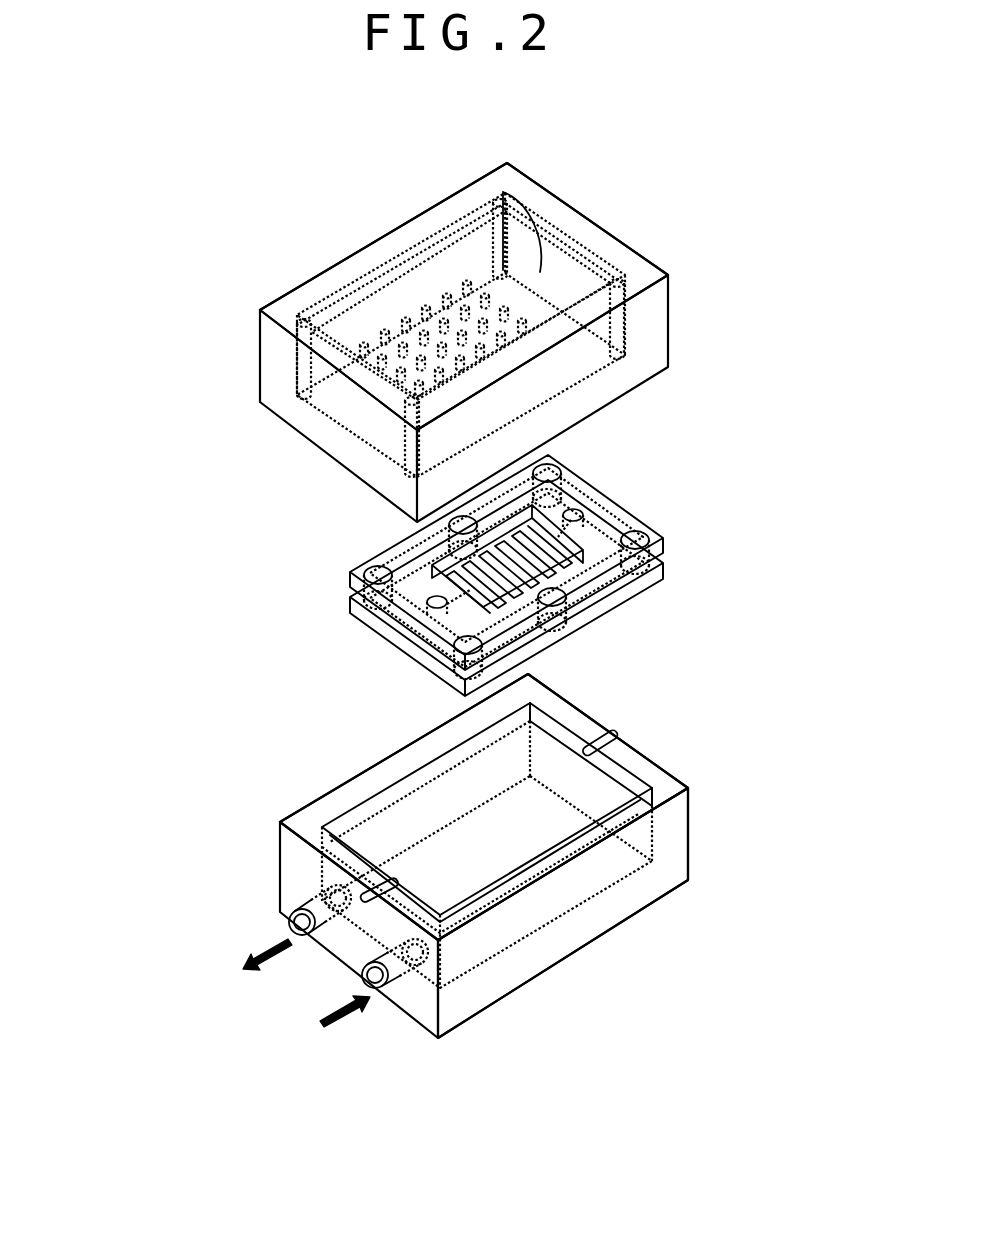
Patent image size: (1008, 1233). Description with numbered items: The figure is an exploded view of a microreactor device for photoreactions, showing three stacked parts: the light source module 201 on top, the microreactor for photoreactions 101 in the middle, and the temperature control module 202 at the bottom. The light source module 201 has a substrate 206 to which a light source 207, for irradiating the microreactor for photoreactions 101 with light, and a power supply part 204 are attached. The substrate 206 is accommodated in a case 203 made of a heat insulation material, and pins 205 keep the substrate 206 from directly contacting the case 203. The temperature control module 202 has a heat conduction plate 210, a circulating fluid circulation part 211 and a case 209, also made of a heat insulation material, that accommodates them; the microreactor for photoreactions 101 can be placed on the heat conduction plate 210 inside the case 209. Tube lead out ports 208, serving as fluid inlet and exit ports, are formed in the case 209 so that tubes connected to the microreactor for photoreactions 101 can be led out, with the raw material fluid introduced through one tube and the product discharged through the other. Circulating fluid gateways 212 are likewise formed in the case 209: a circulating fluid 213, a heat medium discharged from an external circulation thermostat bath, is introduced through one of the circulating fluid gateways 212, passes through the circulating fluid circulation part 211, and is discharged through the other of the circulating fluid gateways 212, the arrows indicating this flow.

The microreactor for photoreactions 101 is at (333, 600).
The light source module 201 is at (243, 368).
The temperature control module 202 is at (262, 878).
The case 203 is at (597, 237).
The power supply part 204 is at (503, 192).
The pins 205 is at (490, 250).
The substrate 206 is at (583, 330).
The light source 207 is at (543, 380).
The tube lead out ports 208 is at (384, 878).
The case 209 is at (667, 790).
The heat conduction plate 210 is at (492, 908).
The circulating fluid circulation part 211 is at (570, 895).
The circulating fluid gateways 212 is at (397, 968).
The circulating fluid 213 is at (297, 1003).